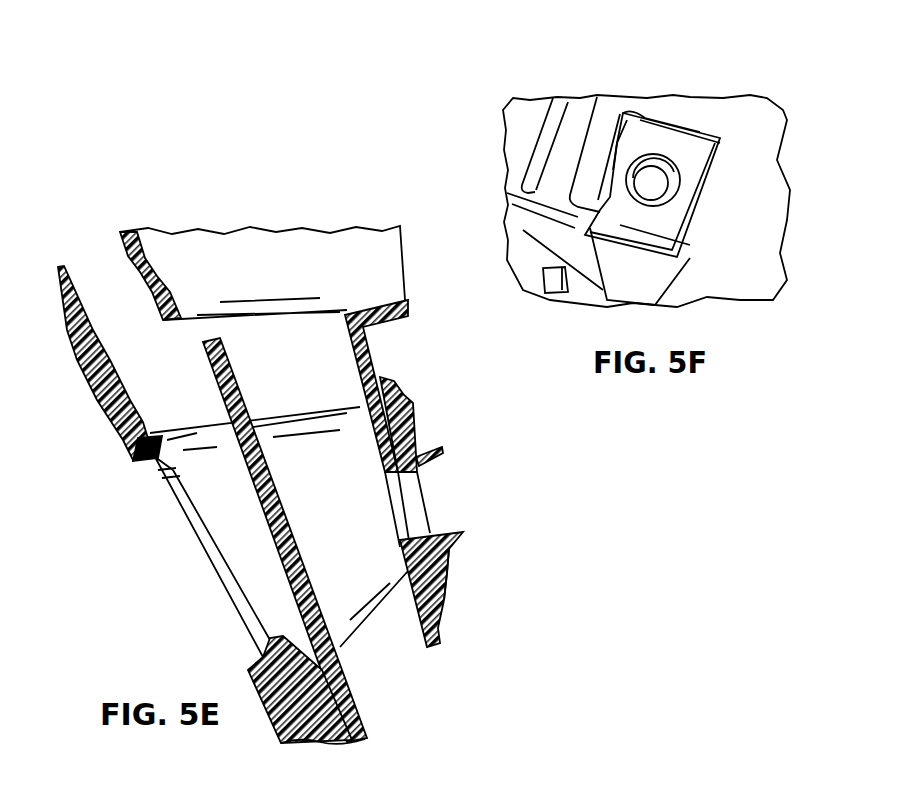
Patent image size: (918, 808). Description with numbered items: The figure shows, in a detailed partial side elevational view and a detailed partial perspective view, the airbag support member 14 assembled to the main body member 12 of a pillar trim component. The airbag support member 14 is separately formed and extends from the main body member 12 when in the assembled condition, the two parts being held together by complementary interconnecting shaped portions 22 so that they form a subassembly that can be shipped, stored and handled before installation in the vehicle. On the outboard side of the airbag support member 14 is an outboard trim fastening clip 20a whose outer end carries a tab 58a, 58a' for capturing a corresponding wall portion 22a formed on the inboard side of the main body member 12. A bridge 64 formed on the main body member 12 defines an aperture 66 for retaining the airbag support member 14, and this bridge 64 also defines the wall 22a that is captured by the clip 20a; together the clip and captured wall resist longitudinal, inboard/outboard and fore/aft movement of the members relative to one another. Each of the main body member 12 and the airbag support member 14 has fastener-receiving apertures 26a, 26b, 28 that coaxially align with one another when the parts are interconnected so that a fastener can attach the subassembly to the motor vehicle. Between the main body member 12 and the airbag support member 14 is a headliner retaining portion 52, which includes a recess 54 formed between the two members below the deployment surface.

In FIG. 5E, the main body member 12 is at (108, 404).
In FIG. 5F, the main body member 12 is at (748, 205).
In FIG. 5E, the airbag support member 14 is at (372, 243).
In FIG. 5F, the airbag support member 14 is at (750, 112).
In FIG. 5E, the outboard trim fastening clip 20a is at (388, 383).
In FIG. 5F, the outboard trim fastening clip 20a is at (697, 117).
In FIG. 5E, the complementary interconnecting shaped portion 22 is at (472, 534).
In FIG. 5F, the complementary interconnecting shaped portion 22 is at (620, 104).
In FIG. 5E, the wall portion 22a is at (438, 555).
In FIG. 5F, the wall portion 22a is at (638, 143).
In FIG. 5E, the fastener-receiving aperture 26a is at (262, 642).
In FIG. 5E, the fastener-receiving aperture 26b is at (408, 478).
In FIG. 5F, the fastener-receiving aperture 26b is at (670, 185).
In FIG. 5E, the fastener-receiving aperture 28 is at (398, 548).
In FIG. 5E, the headliner retaining portion 52 is at (105, 267).
In FIG. 5E, the recess 54 is at (73, 303).
In FIG. 5E, the tab 58a is at (491, 607).
In FIG. 5F, the tab 58a is at (708, 279).
In FIG. 5E, the tab 58a' is at (438, 406).
In FIG. 5F, the tab 58a' is at (677, 81).
In FIG. 5E, the bridge 64 is at (412, 440).
In FIG. 5F, the bridge 64 is at (742, 235).
In FIG. 5E, the aperture 66 is at (324, 404).